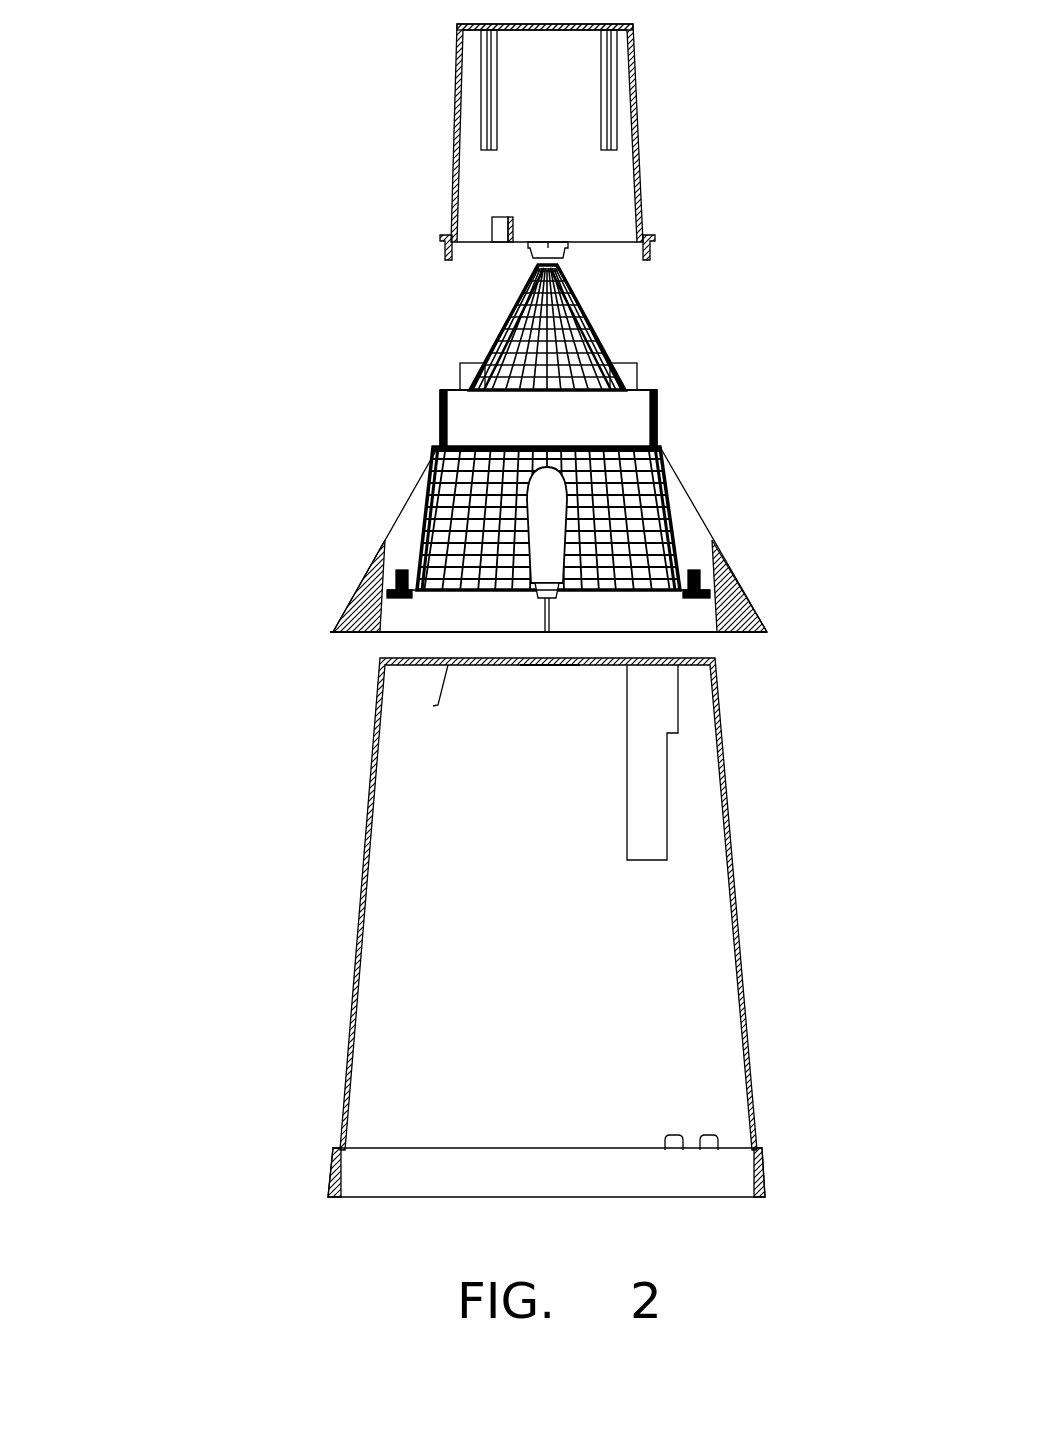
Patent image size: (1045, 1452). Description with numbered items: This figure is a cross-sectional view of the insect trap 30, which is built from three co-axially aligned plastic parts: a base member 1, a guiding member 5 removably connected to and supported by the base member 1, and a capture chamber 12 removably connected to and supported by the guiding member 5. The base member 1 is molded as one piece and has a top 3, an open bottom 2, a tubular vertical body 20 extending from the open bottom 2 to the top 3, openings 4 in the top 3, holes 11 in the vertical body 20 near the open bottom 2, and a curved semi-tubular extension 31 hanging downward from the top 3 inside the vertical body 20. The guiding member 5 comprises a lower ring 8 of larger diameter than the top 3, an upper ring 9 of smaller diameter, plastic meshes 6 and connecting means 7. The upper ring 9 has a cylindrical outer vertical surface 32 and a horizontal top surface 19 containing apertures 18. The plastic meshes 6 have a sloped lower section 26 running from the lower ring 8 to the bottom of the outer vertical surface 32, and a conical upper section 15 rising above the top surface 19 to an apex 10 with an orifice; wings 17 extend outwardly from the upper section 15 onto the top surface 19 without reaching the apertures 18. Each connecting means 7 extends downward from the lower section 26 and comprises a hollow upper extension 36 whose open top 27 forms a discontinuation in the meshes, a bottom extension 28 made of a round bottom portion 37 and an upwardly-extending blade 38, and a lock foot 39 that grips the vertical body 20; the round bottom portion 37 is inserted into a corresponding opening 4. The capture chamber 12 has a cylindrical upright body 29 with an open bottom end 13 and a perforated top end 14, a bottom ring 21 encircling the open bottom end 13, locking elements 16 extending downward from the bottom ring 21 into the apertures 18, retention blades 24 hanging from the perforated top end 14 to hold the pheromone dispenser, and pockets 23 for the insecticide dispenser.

The base member 1 is at (284, 945).
The open bottom 2 is at (435, 1197).
The top 3 is at (437, 706).
The openings 4 is at (679, 763).
The guiding member 5 is at (314, 557).
The plastic meshes 6 is at (600, 347).
The connecting means 7 is at (672, 525).
The lower ring 8 is at (335, 612).
The upper ring 9 is at (655, 405).
The apex 10 is at (423, 299).
The holes 11 is at (745, 1207).
The capture chamber 12 is at (424, 150).
The open bottom end 13 is at (384, 258).
The perforated top end 14 is at (604, 17).
The upper section 15 is at (600, 318).
The locking elements 16 is at (665, 224).
The wings 17 is at (460, 372).
The apertures 18 is at (461, 396).
The top surface 19 is at (655, 385).
The tubular vertical body 20 is at (742, 995).
The bottom ring 21 is at (657, 237).
The pockets 23 is at (492, 226).
The retention blades 24 is at (480, 105).
The lower section 26 is at (657, 452).
The open top 27 is at (672, 467).
The bottom extension 28 is at (697, 592).
The cylindrical upright body 29 is at (640, 103).
The insect trap 30 is at (185, 701).
The semi-tubular extension 31 is at (653, 818).
The outer vertical surface 32 is at (440, 420).
The hollow upper extension 36 is at (420, 508).
The round bottom portion 37 is at (712, 590).
The upwardly-extending blade 38 is at (738, 578).
The lock foot 39 is at (765, 625).